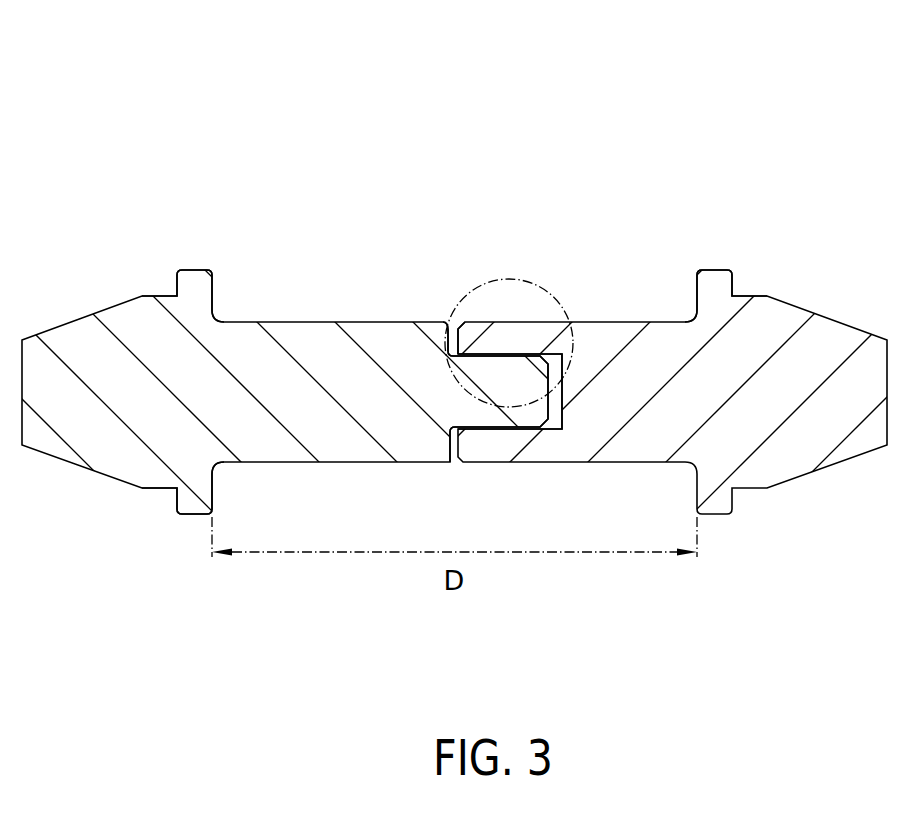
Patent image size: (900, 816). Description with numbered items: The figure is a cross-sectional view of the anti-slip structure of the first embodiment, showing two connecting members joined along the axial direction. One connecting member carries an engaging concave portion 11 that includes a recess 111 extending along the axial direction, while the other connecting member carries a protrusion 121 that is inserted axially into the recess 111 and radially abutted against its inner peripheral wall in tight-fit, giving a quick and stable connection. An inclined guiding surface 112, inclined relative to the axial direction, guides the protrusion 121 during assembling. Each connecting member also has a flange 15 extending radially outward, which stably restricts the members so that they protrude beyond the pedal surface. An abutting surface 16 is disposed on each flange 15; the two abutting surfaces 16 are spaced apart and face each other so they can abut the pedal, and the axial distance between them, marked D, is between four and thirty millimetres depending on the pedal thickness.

The engaging concave portion 11 is at (582, 118).
The recess 111 is at (552, 373).
The inclined guiding surface 112 is at (465, 350).
The protrusion 121 is at (497, 392).
The flange 15 is at (188, 507).
The abutting surface 16 is at (213, 290).